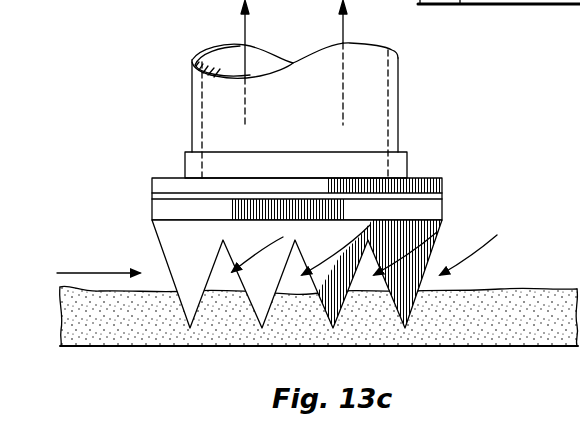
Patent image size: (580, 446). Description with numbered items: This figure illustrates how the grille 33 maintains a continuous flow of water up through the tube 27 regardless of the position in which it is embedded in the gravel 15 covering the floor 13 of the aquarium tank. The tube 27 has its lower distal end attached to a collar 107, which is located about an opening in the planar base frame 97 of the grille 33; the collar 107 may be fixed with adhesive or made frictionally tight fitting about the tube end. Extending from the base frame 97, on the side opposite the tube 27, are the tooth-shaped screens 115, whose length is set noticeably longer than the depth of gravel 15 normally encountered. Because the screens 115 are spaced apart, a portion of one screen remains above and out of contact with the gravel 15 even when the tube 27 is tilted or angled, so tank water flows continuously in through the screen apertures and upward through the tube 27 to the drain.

The tube 27 is at (193, 110).
The collar 107 is at (185, 177).
The planar base frame 97 is at (158, 210).
The grille 33 is at (440, 238).
The tooth-shaped screens 115 is at (250, 308).
The floor 13 is at (515, 340).
The gravel 15 is at (468, 332).